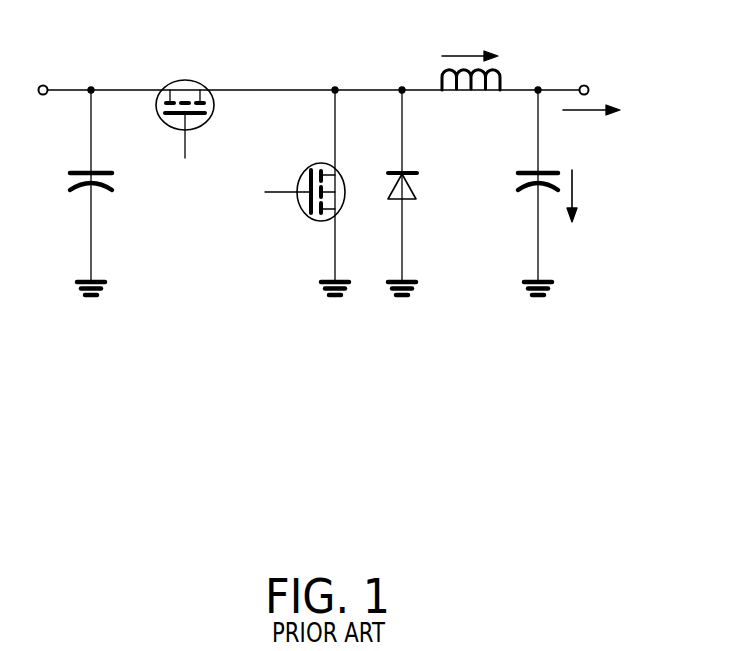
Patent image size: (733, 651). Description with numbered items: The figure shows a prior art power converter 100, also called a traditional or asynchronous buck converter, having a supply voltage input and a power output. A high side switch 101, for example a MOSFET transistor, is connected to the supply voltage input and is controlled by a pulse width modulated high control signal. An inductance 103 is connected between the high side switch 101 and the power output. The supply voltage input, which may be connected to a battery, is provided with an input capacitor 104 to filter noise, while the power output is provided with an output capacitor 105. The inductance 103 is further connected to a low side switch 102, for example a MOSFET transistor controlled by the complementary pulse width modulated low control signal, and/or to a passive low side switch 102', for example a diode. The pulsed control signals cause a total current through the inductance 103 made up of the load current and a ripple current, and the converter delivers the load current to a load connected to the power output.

The power converter 100 is at (127, 356).
The high side switch 101 is at (216, 108).
The low side switch 102 is at (297, 187).
The passive low side switch 102' is at (391, 163).
The inductance 103 is at (440, 78).
The input capacitor 104 is at (72, 167).
The output capacitor 105 is at (520, 167).